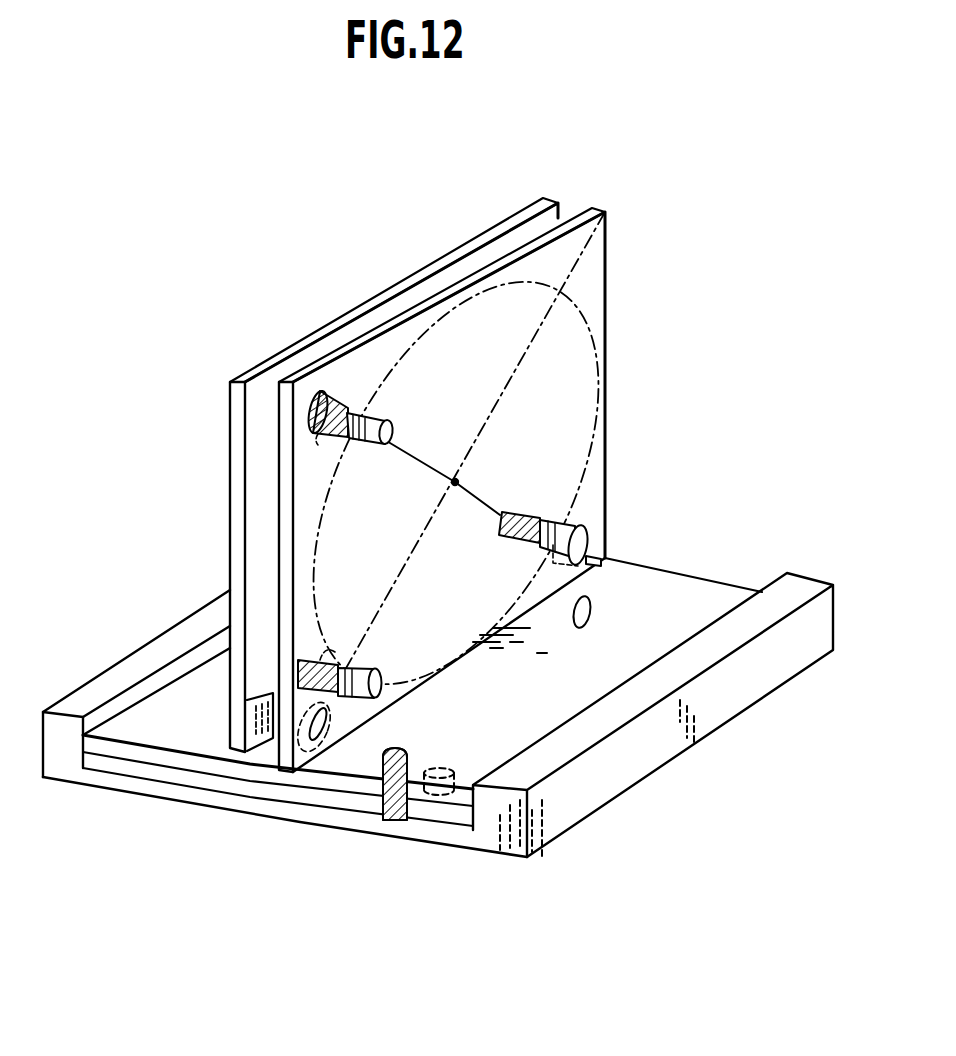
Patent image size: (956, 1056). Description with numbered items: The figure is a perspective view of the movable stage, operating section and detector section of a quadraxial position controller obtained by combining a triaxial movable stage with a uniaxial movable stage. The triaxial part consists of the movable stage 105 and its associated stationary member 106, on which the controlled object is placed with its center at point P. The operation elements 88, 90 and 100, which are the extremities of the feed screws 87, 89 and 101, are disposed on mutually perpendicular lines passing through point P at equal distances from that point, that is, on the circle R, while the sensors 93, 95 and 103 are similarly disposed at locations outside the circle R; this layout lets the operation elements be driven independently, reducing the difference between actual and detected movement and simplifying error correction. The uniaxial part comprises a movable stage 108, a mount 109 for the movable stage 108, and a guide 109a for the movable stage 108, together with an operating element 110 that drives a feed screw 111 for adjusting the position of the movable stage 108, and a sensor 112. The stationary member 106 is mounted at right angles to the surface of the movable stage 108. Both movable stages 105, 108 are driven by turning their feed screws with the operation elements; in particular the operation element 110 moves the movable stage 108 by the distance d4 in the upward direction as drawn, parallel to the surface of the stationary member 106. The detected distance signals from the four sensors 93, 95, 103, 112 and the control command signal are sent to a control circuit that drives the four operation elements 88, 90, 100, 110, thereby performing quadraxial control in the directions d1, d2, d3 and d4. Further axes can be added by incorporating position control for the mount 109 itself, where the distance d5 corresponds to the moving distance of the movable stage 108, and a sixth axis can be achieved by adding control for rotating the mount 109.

The feed screw 87 is at (323, 438).
The operation element 88 is at (392, 430).
The feed screw 89 is at (522, 510).
The operation element 90 is at (583, 512).
The sensor 93 is at (328, 393).
The sensor 95 is at (590, 565).
The operation element 100 is at (362, 668).
The feed screw 101 is at (336, 652).
The sensor 103 is at (322, 762).
The movable stage 105 is at (380, 294).
The stationary member 106 is at (592, 276).
The movable stage 108 is at (193, 762).
The mount 109 is at (258, 806).
The guide 109a is at (113, 684).
The operating element 110 is at (384, 826).
The feed screw 111 is at (410, 764).
The sensor 112 is at (437, 800).
The center of the movable stage P is at (452, 482).
The circle R is at (600, 398).
The control axis direction d1 is at (283, 410).
The control axis direction d2 is at (500, 519).
The control axis direction d3 is at (260, 668).
The moving distance d4 is at (400, 730).
The moving distance d5 is at (113, 773).